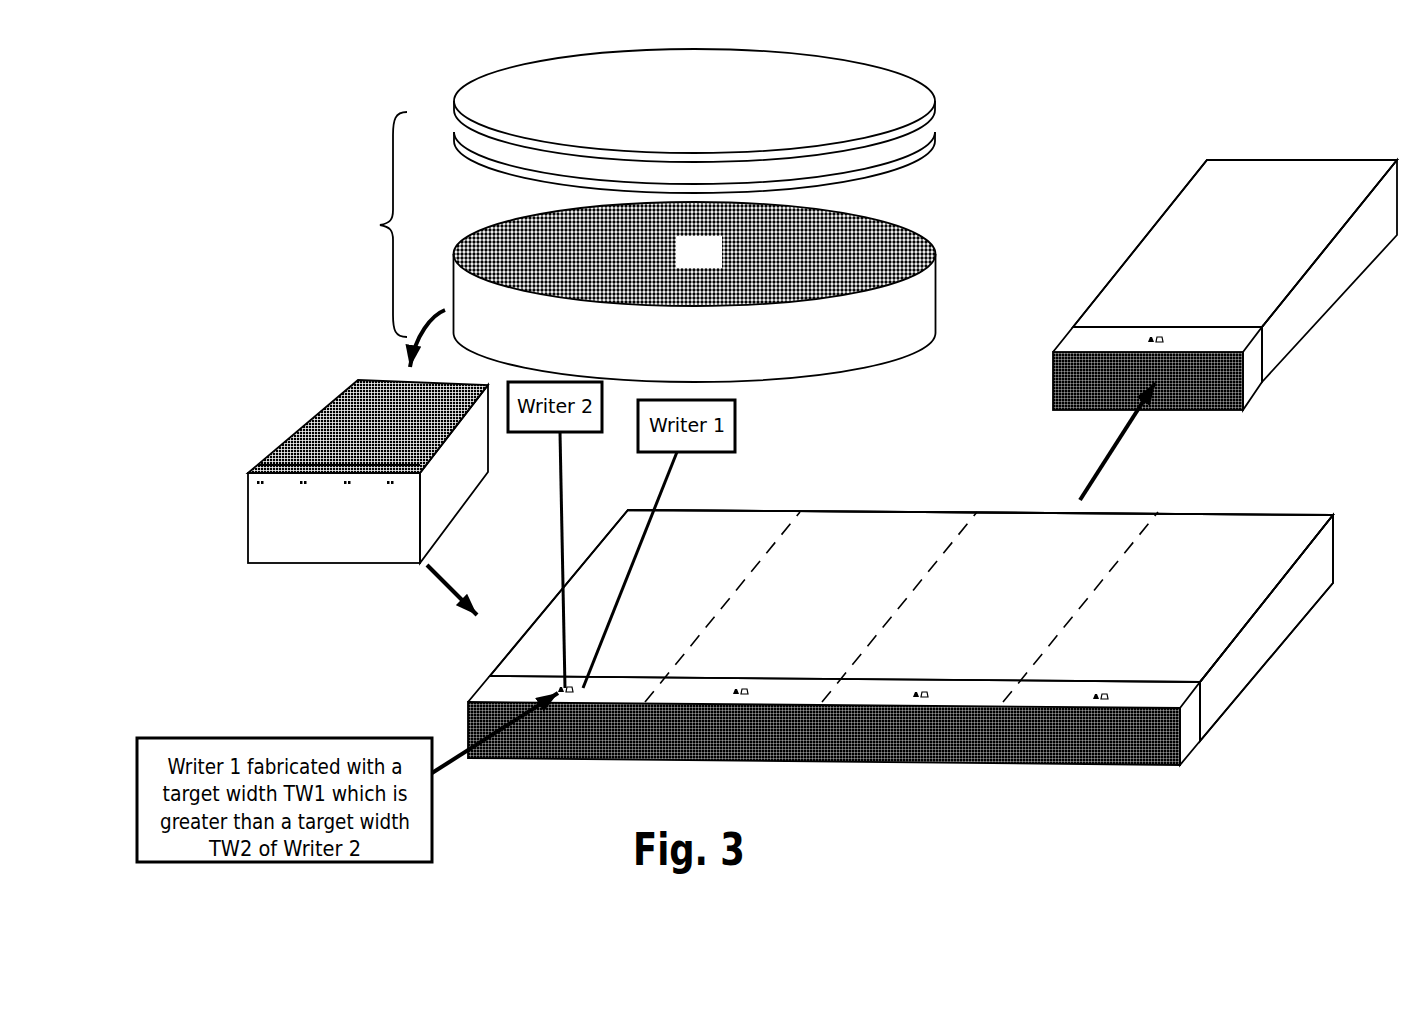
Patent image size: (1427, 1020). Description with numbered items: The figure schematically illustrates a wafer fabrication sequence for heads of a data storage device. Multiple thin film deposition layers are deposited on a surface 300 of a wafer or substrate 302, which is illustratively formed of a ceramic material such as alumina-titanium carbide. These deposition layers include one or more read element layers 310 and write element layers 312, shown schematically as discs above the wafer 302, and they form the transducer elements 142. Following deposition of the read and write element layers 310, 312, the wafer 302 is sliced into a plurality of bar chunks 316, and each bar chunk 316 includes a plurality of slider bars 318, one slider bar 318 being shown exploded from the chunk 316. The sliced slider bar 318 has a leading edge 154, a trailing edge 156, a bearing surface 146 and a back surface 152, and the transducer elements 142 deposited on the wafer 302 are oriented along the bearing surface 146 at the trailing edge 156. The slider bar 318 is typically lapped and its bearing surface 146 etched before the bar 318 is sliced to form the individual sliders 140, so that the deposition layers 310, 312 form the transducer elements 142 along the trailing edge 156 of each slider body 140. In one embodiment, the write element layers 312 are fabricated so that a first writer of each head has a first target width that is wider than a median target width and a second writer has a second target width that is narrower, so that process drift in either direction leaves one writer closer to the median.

The slider 140 is at (1235, 505).
The transducer elements 142 is at (386, 496).
The bearing surface 146 is at (975, 639).
The back surface 152 is at (1250, 683).
The leading edge 154 is at (855, 512).
The trailing edge 156 is at (1055, 752).
The surface 300 is at (681, 265).
The wafer 302 is at (933, 255).
The read element layers 310 is at (937, 153).
The write element layers 312 is at (937, 112).
The bar chunk 316 is at (350, 365).
The slider bar 318 is at (257, 470).